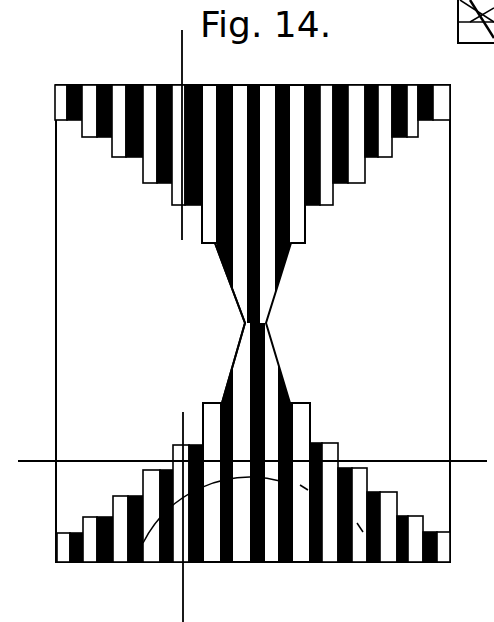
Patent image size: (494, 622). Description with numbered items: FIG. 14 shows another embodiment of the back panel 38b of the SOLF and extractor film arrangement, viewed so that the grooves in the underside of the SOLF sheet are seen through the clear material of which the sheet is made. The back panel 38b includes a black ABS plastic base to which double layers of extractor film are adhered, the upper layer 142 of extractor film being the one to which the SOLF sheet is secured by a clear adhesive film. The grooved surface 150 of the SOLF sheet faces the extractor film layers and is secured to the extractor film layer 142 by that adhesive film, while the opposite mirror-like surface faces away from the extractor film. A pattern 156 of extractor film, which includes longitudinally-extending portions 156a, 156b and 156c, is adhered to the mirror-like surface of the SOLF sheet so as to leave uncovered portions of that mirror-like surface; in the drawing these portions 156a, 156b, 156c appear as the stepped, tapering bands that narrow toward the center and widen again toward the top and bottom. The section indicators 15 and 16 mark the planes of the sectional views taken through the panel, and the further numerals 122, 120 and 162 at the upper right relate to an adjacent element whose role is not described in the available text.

The back panel 38b is at (57, 80).
The upper layer of extractor film 142 is at (82, 308).
The grooved surface 150 is at (310, 85).
The pattern of extractor film 156 is at (252, 323).
The longitudinally-extending portion 156a is at (248, 290).
The longitudinally-extending portion 156b is at (212, 247).
The longitudinally-extending portion 156c is at (173, 207).
The adjacent element 122 is at (462, 2).
The adjacent element 120 is at (483, 72).
The adjacent element 162 is at (481, 100).
The section line 15- 15 is at (181, 50).
The section line 16- 16 is at (32, 466).